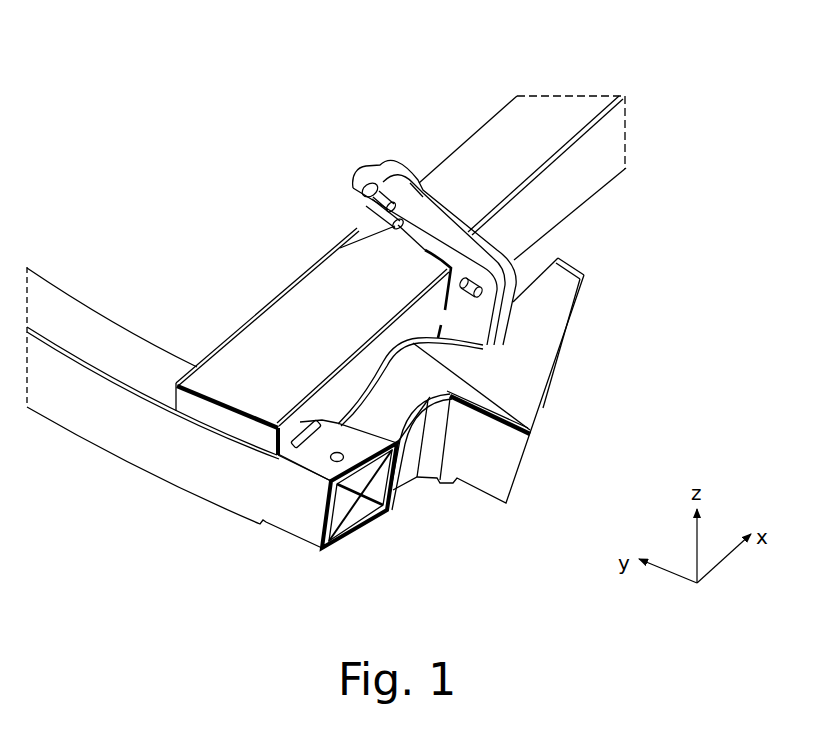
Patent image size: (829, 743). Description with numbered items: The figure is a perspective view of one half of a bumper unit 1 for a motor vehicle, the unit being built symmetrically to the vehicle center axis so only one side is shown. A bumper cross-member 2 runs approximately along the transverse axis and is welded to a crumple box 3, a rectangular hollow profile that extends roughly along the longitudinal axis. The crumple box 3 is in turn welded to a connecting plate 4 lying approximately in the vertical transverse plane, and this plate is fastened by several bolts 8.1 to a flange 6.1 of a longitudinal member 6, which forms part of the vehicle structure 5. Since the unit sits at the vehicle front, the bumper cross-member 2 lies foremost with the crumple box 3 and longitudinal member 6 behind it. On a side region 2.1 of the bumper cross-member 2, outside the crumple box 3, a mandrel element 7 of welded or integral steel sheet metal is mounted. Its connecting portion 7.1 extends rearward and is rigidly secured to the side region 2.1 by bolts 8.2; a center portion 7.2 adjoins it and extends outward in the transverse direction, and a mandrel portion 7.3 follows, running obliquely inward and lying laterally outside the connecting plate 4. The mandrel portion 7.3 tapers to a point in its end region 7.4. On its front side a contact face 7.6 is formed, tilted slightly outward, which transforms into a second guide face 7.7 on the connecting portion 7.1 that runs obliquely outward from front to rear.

The bumper unit 1 is at (139, 204).
The bumper cross-member 2 is at (175, 479).
The side region 2.1 is at (315, 556).
The crumple box 3 is at (233, 372).
The connecting plate 4 is at (353, 230).
The vehicle structure 5 is at (424, 69).
The longitudinal member 6 is at (495, 158).
The flange 6.1 is at (376, 157).
The mandrel element 7 is at (540, 350).
The connecting portion 7.1 is at (370, 394).
The center portion 7.2 is at (480, 380).
The mandrel portion 7.3 is at (555, 310).
The end region 7.4 is at (582, 258).
The contact face 7.6 is at (480, 474).
The second guide face 7.7 is at (427, 446).
The bolts 8.1 is at (353, 198).
The bolts 8.2 is at (330, 457).